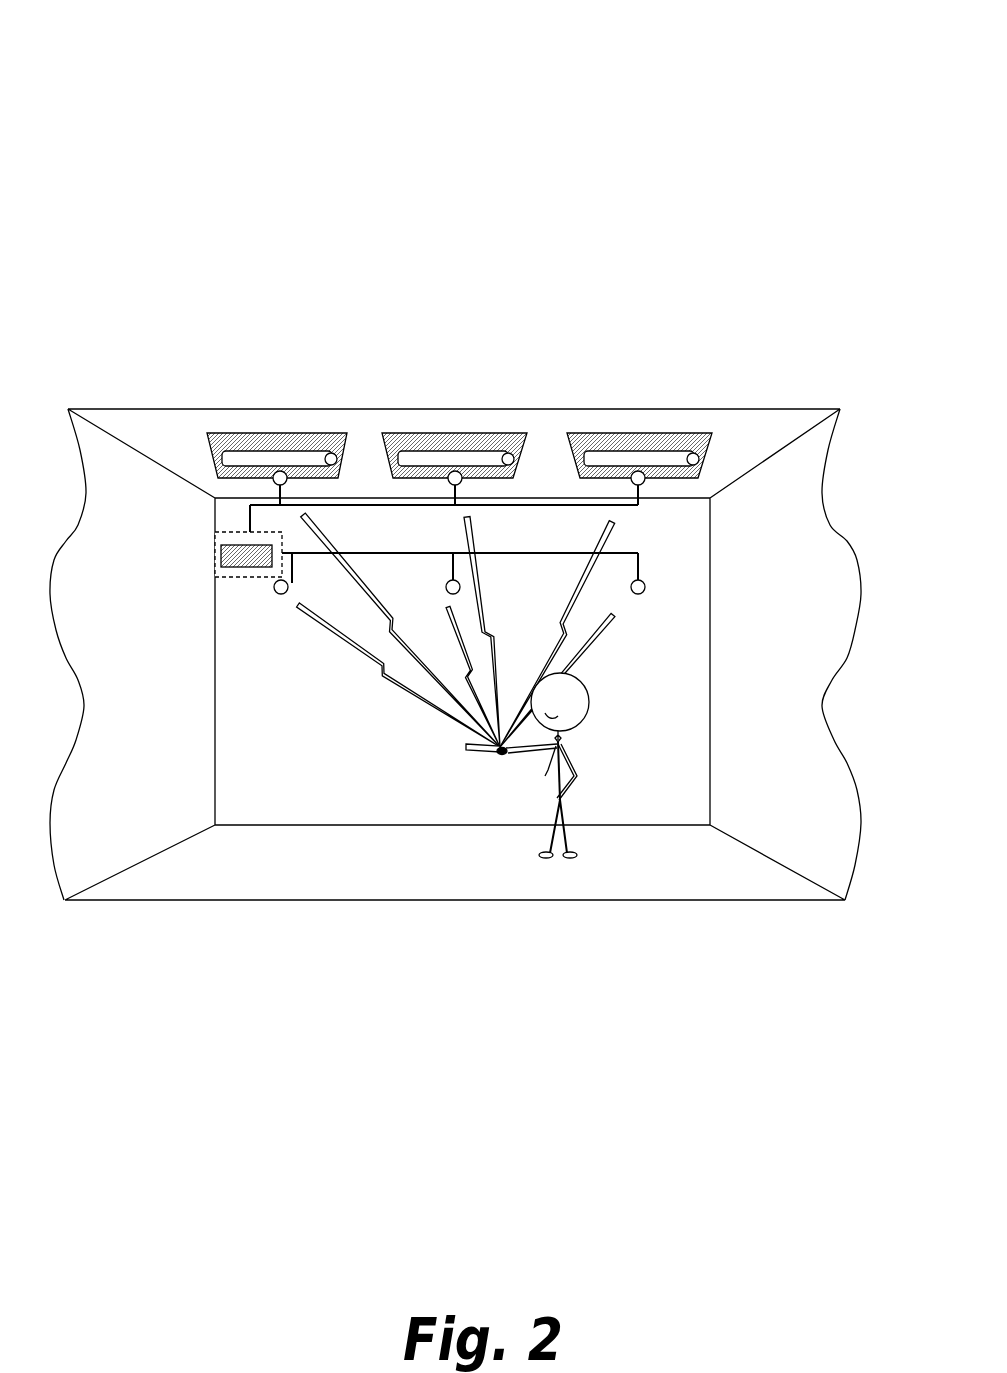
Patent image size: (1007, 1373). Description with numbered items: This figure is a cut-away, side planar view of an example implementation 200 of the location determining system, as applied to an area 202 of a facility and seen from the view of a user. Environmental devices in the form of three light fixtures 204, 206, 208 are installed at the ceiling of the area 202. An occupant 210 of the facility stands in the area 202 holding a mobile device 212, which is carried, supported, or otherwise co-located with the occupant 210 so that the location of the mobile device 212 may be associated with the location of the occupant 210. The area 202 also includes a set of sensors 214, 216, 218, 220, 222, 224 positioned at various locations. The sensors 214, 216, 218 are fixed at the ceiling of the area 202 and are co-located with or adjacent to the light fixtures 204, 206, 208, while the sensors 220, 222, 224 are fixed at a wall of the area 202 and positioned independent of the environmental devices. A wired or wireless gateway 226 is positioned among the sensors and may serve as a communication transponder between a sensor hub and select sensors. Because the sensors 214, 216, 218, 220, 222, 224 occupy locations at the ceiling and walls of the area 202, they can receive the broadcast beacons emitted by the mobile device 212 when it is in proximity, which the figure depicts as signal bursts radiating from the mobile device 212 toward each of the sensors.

The example implementation 200 is at (150, 62).
The area 202 is at (308, 753).
The light fixture 204 is at (284, 432).
The light fixture 206 is at (460, 432).
The light fixture 208 is at (645, 432).
The occupant 210 is at (575, 772).
The mobile device 212 is at (490, 750).
The sensor 214 is at (277, 472).
The sensor 216 is at (452, 472).
The sensor 218 is at (635, 472).
The sensor 220 is at (277, 592).
The sensor 222 is at (451, 580).
The sensor 224 is at (645, 582).
The wired or wireless gateway 226 is at (214, 553).